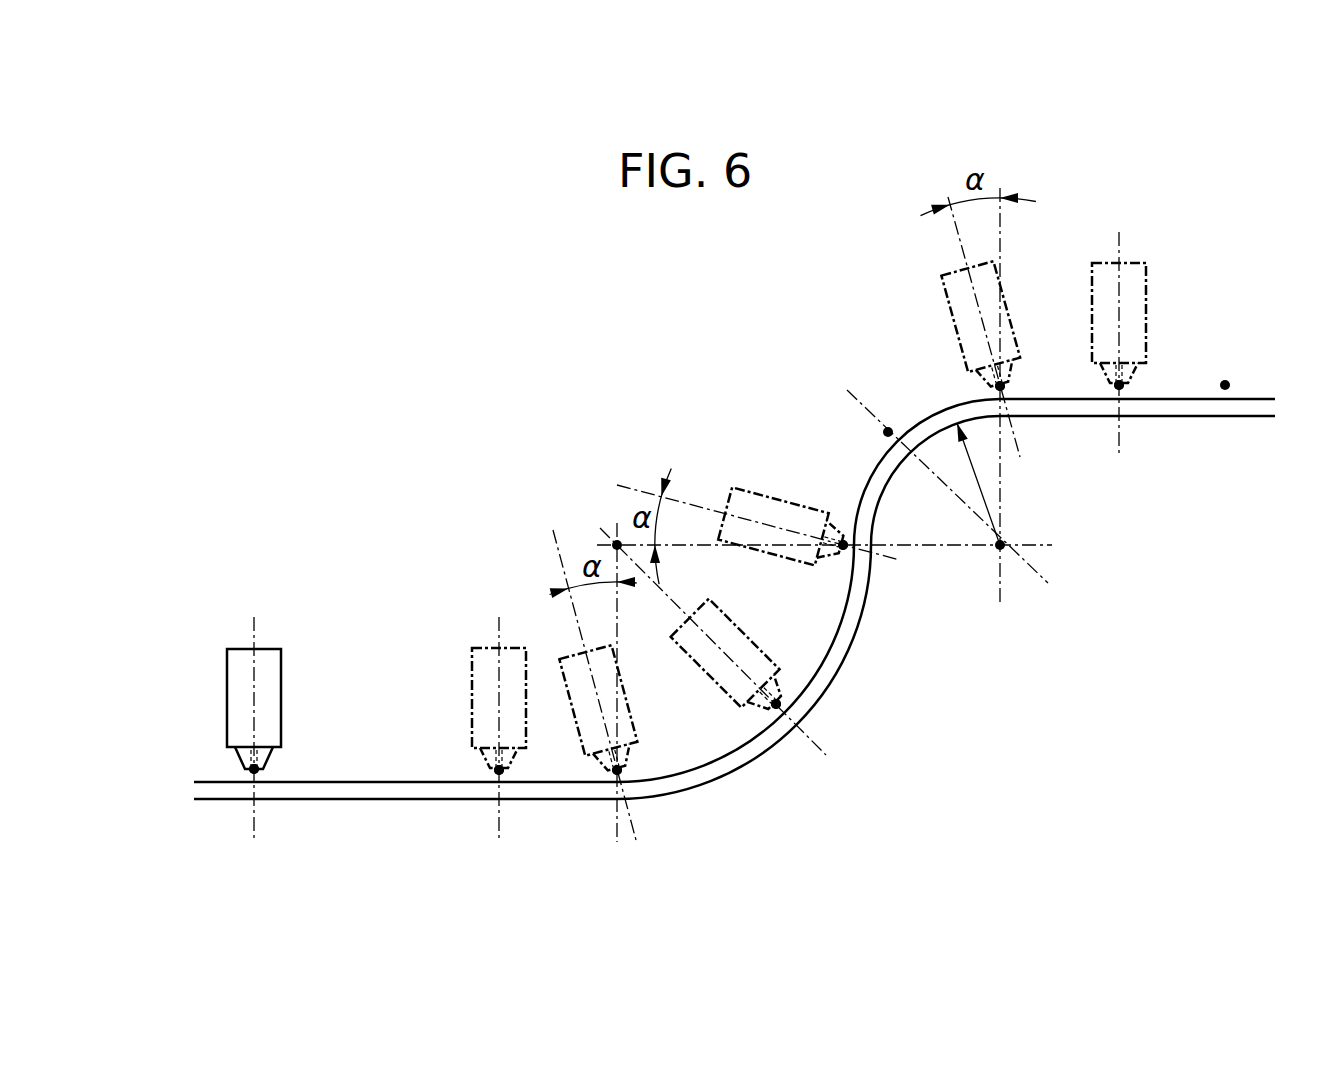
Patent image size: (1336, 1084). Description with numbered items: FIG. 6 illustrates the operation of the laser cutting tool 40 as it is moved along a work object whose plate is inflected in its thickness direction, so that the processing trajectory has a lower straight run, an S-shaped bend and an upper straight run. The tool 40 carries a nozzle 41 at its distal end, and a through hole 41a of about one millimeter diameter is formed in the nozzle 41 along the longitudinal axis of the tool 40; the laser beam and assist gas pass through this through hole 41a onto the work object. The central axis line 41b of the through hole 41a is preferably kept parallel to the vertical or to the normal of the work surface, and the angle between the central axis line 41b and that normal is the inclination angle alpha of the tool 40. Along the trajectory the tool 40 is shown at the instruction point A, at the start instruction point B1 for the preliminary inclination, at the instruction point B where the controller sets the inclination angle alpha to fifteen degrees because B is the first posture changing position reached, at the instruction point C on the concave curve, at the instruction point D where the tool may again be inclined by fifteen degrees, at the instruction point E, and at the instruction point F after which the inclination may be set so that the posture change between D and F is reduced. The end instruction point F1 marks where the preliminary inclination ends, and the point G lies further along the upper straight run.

The tool 40 is at (281, 696).
The nozzle 41 is at (270, 758).
The through hole 41a is at (244, 758).
The central axis line 41b is at (254, 621).
The instruction point A is at (256, 772).
The start instruction point B1 is at (497, 773).
The instruction point B is at (619, 773).
The instruction point C is at (777, 708).
The instruction point D is at (841, 548).
The application position E is at (889, 430).
The instruction point F is at (1002, 388).
The end instruction point F1 is at (1121, 387).
The application position G is at (1225, 383).